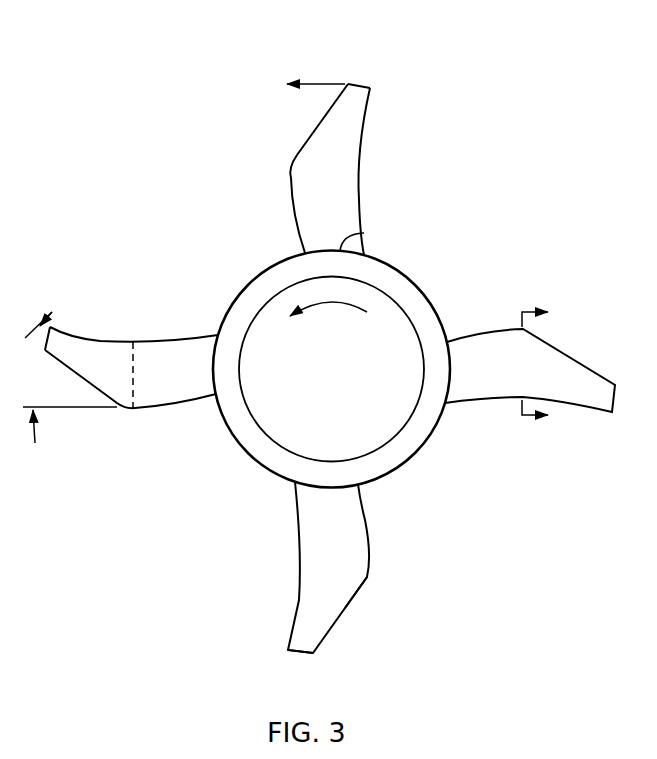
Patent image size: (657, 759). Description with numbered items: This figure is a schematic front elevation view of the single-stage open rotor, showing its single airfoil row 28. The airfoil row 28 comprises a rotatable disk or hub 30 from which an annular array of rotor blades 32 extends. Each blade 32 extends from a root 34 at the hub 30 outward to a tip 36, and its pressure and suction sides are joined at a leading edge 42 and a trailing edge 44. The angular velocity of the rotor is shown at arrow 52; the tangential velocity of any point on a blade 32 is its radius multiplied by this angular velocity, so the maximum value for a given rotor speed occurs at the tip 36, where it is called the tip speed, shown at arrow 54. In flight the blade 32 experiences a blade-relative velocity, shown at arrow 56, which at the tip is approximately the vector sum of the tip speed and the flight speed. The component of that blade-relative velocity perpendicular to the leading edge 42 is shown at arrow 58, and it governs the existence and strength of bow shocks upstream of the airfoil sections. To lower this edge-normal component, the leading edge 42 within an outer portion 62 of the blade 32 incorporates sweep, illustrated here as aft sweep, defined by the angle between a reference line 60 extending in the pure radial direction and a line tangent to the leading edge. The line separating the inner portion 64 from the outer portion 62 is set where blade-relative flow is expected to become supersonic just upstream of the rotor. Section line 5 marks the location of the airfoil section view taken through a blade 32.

The airfoil row 28 is at (390, 48).
The hub 30 is at (412, 292).
The rotor blade 32 is at (335, 378).
The root 34 is at (364, 233).
The tip 36 is at (365, 85).
The leading edge 42 is at (291, 188).
The trailing edge 44 is at (360, 188).
The angular velocity 52 is at (343, 320).
The tip speed 54 is at (301, 85).
The blade-relative velocity 56 is at (408, 670).
The blade-relative velocity component perpendicular to the leading edge 58 is at (408, 670).
The reference line 60 is at (83, 409).
The outer portion 62 is at (92, 338).
The inner portion 64 is at (171, 404).
The section line 5- 5 is at (545, 364).